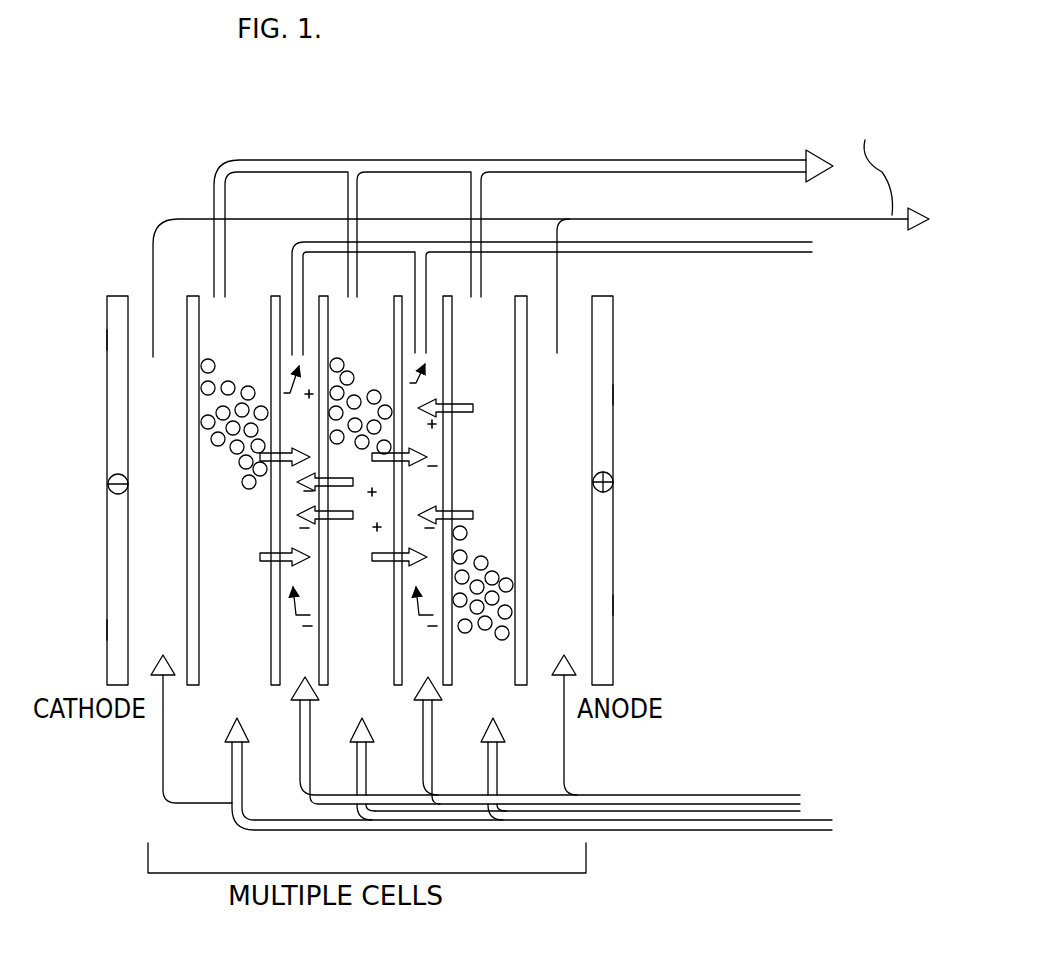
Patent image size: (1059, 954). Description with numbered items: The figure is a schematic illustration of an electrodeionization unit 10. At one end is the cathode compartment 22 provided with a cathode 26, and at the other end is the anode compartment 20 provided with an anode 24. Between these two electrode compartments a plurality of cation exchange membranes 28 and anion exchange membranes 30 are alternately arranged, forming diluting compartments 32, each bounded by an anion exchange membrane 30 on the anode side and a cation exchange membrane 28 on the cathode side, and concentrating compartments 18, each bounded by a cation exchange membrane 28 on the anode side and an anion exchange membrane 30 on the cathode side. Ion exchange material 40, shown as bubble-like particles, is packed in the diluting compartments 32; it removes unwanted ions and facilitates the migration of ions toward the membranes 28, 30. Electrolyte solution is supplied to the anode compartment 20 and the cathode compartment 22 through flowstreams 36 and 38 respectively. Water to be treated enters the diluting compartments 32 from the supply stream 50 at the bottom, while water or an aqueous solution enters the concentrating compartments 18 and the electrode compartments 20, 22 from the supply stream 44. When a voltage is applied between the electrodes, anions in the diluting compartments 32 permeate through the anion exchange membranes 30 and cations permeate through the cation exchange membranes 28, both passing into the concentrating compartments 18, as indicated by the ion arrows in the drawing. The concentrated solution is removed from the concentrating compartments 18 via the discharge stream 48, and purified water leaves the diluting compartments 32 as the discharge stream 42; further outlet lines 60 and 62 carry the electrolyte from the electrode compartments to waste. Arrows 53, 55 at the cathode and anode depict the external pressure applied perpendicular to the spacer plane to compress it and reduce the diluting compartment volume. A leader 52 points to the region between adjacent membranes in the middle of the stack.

The electrodeionization unit 10 is at (173, 183).
The concentrating compartments 18 is at (312, 296).
The anode compartment 20 is at (563, 477).
The cathode compartment 22 is at (171, 477).
The anode 24 is at (614, 457).
The cathode 26 is at (105, 542).
The cation exchange membranes 28 is at (200, 616).
The anion exchange membranes 30 is at (268, 519).
The diluting compartments 32 is at (248, 668).
The flowstream 36 is at (562, 712).
The flowstream 38 is at (161, 751).
The ion exchange material 40 is at (244, 366).
The discharge stream 42 is at (572, 159).
The supply stream 44 is at (540, 802).
The discharge stream 48 is at (637, 254).
The supply stream 50 is at (792, 831).
The compartment between membranes 52 is at (402, 495).
The arrow 53 is at (104, 337).
The arrow 55 is at (618, 395).
The catholyte outlet line 60 is at (153, 272).
The anolyte outlet tube 62 is at (558, 290).